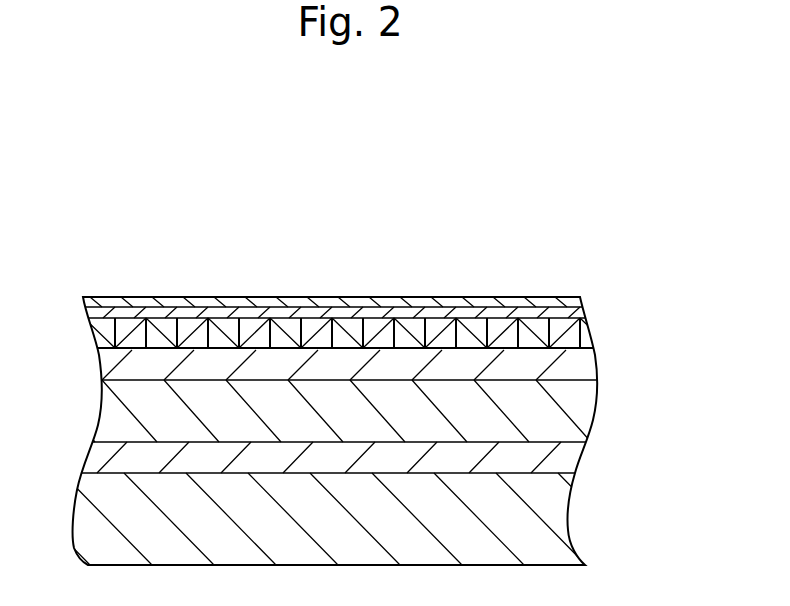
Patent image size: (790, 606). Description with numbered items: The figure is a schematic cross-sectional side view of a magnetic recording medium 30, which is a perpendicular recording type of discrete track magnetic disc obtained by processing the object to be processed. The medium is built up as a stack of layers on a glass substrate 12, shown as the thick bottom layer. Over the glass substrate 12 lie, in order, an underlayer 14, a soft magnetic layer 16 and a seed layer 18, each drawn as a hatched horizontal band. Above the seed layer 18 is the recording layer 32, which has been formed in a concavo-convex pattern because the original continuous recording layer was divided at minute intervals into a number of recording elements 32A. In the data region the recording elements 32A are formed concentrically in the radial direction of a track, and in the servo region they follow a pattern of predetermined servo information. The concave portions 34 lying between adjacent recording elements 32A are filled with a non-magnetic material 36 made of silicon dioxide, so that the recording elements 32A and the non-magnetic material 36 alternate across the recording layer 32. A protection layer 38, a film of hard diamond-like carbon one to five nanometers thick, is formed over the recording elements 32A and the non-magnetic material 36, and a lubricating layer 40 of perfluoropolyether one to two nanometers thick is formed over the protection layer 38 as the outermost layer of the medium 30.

The magnetic recording medium 30 is at (341, 150).
The glass substrate 12 is at (570, 507).
The underlayer 14 is at (580, 457).
The soft magnetic layer 16 is at (598, 401).
The seed layer 18 is at (598, 363).
The recording layer 32 is at (365, 275).
The recording element 32A is at (345, 322).
The concave portion 34 is at (246, 328).
The non-magnetic material 36 is at (378, 322).
The protection layer 38 is at (586, 313).
The lubricating layer 40 is at (582, 297).